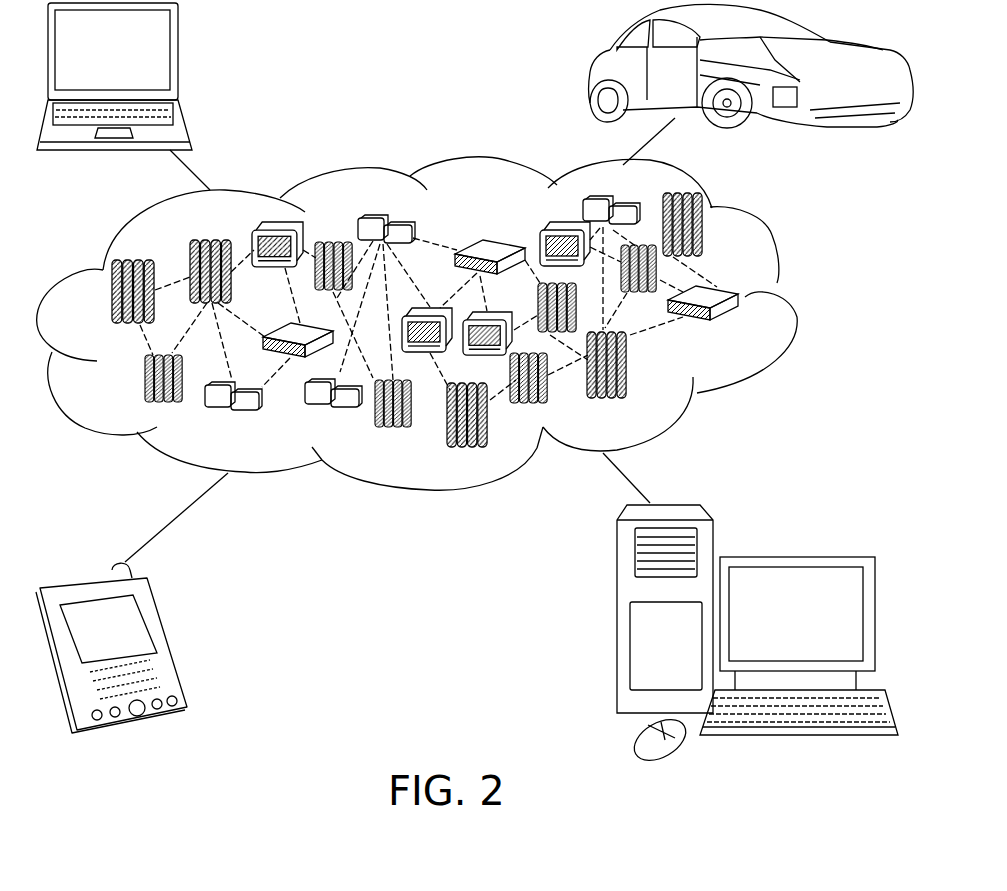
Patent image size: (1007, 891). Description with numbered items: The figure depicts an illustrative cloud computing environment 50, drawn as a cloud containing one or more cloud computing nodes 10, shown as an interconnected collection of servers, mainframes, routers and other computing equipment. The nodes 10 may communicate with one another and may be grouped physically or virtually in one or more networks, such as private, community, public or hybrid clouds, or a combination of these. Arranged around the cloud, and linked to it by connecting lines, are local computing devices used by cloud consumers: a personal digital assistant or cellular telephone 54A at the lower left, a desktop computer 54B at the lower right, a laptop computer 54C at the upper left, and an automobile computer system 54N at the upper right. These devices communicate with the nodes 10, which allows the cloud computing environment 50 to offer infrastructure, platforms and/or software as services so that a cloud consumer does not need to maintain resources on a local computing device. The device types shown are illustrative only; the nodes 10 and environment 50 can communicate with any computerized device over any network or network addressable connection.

The cloud computing environment 50 is at (797, 302).
The cloud computing node 10 is at (740, 327).
The personal digital assistant or cellular telephone 54A is at (172, 642).
The desktop computer 54B is at (793, 558).
The laptop computer 54C is at (178, 58).
The automobile computer system 54N is at (587, 72).